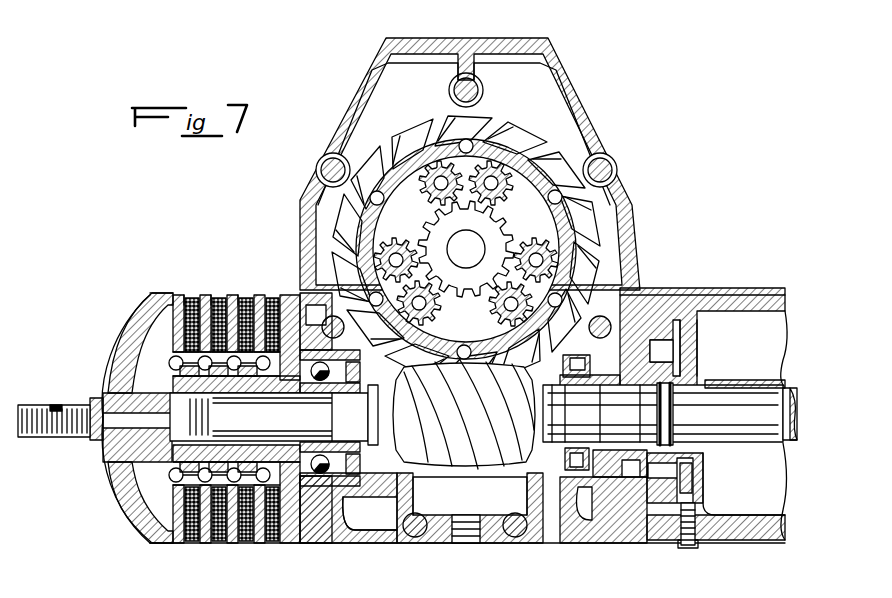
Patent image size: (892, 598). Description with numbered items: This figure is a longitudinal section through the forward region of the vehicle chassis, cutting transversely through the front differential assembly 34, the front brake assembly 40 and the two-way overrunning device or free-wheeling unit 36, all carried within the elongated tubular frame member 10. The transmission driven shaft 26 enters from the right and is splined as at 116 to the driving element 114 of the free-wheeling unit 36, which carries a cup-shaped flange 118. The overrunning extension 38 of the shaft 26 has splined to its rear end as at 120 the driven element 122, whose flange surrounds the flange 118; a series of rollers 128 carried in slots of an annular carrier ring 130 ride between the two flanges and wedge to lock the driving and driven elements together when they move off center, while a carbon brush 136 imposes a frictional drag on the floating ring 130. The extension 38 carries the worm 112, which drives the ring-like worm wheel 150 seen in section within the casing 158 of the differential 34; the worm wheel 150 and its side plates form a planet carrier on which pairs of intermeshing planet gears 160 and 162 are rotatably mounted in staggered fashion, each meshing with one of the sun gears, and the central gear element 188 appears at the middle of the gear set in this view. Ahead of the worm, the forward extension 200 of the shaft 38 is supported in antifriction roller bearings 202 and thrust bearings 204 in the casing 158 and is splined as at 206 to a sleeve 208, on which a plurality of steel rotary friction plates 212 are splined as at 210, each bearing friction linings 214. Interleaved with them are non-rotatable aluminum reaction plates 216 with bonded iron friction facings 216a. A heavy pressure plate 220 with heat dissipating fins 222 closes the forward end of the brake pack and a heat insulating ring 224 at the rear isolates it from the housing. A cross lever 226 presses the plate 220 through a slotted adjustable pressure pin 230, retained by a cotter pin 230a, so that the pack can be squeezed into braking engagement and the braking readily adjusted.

The tubular frame member 10 is at (472, 297).
The driven shaft 26 is at (792, 390).
The front differential assembly 34 is at (435, 122).
The two-way overrunning device or free-wheeling unit 36 is at (684, 308).
The overrunning extension 38 is at (545, 448).
The front brake assembly 40 is at (205, 417).
The worm 112 is at (484, 459).
The driving element 114 is at (724, 382).
The splines 116 is at (758, 388).
The cup-shaped flange 118 is at (647, 414).
The splines 120 is at (604, 395).
The driven element 122 is at (693, 497).
The rollers 128 is at (680, 349).
The annular carrier ring 130 is at (690, 340).
The carbon brush 136 is at (697, 518).
The worm wheel 150 is at (526, 128).
The casing 158 is at (338, 132).
The planet gears 160 is at (430, 196).
The planet gears 162 is at (396, 252).
The sun gear 188 is at (466, 257).
The forward extension 200 is at (362, 452).
The antifriction roller bearings 202 is at (355, 474).
The thrust bearings 204 is at (370, 513).
The splines 206 is at (316, 411).
The sleeve 208 is at (170, 452).
The splines 210 is at (170, 464).
The rotary driven friction plates 212 is at (204, 545).
The friction linings 214 is at (162, 547).
The non-rotatable reaction plates 216 is at (256, 545).
The iron friction facings 216a is at (218, 296).
The pressure plate 220 is at (147, 358).
The heat dissipating fins 222 is at (120, 367).
The heat insulating ring 224 is at (292, 544).
The cross lever 226 is at (70, 405).
The pressure pin 230 is at (33, 438).
The cotter pin 230a is at (54, 400).